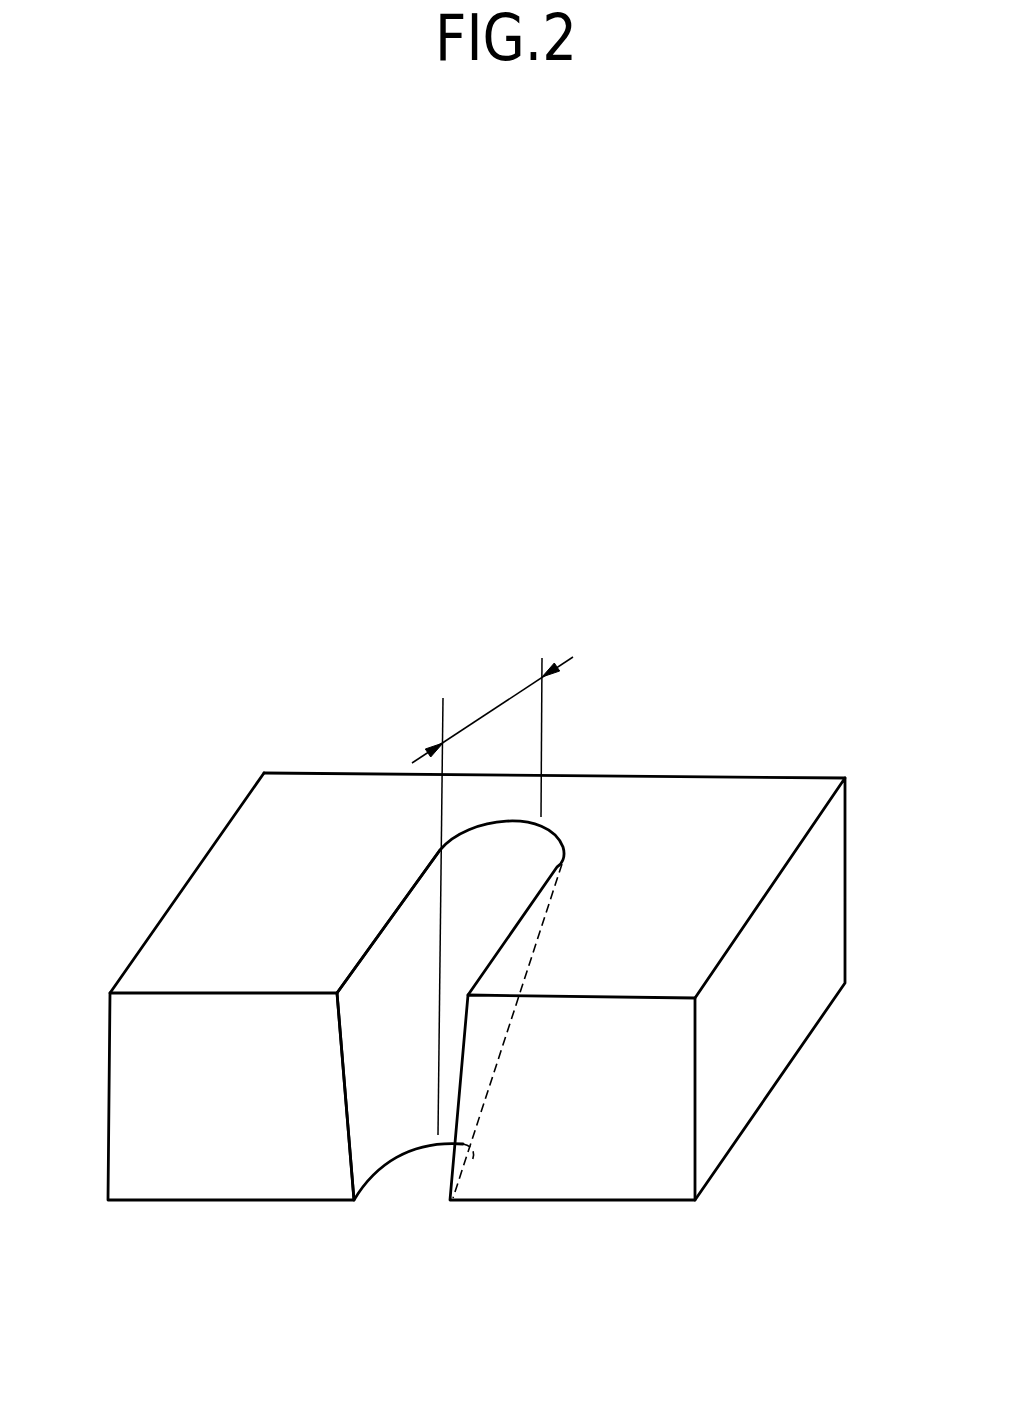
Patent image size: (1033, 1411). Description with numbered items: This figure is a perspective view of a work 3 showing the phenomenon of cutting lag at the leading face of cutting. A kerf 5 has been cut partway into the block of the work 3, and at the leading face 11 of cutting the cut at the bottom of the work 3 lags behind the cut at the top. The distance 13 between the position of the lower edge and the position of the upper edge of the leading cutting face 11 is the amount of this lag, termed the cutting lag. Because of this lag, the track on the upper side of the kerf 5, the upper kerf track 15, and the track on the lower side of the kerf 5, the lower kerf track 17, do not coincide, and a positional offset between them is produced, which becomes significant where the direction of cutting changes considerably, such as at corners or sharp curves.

The work 3 is at (247, 735).
The kerf 5 is at (397, 1034).
The leading face of cutting 11 is at (525, 900).
The cutting lag 13 is at (493, 707).
The upper kerf track 15 is at (403, 943).
The lower kerf track 17 is at (405, 1212).